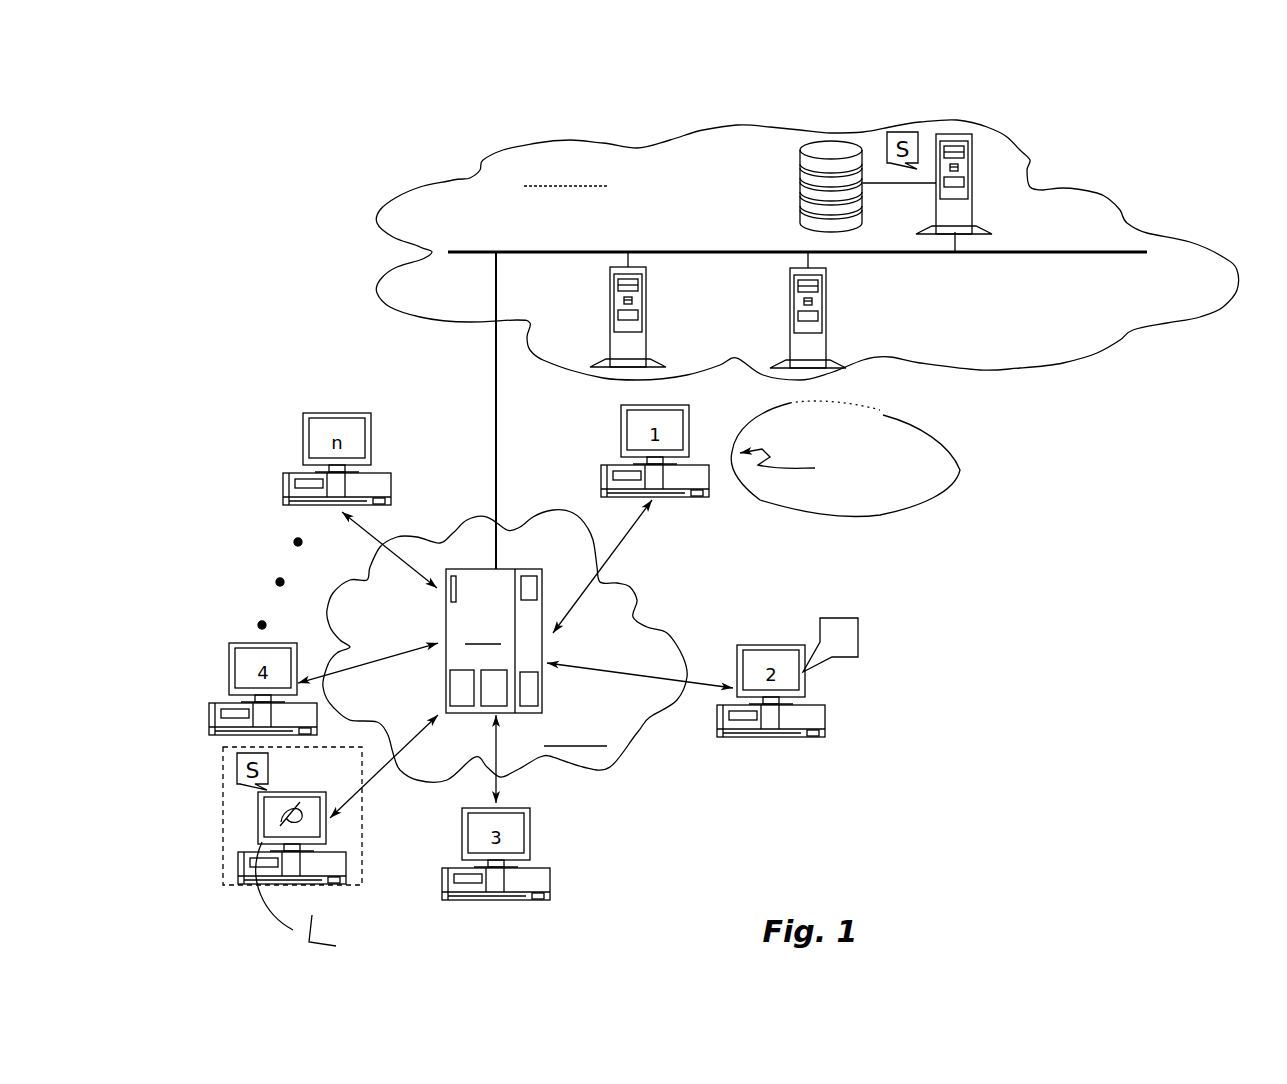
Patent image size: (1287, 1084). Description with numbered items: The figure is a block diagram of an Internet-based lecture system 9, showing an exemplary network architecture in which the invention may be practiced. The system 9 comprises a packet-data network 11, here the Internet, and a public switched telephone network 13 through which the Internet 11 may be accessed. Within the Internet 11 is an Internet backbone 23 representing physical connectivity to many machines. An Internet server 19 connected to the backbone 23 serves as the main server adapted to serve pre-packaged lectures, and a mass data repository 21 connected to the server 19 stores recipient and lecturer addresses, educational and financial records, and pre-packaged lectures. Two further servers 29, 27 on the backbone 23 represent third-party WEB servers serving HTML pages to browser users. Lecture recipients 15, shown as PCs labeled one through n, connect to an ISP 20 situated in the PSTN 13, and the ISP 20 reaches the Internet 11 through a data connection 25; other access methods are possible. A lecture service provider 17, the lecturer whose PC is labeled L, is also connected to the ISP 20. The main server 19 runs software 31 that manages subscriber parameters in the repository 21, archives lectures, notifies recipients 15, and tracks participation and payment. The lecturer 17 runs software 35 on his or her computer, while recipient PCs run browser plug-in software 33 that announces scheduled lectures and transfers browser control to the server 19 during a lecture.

The Internet-based lecture system 9 is at (1068, 531).
The packet-data network 11 is at (466, 162).
The public switched telephone network 13 is at (612, 772).
The lecture recipients 15 is at (825, 469).
The lecture service provider 17 is at (223, 850).
The Internet server 19 is at (973, 193).
The ISP 20 is at (545, 647).
The mass data repository 21 is at (800, 207).
The Internet backbone 23 is at (592, 251).
The data connection 25 is at (494, 442).
The server 27 is at (827, 325).
The server 29 is at (647, 325).
The software 31 is at (903, 132).
The software 33 is at (858, 638).
The software 35 is at (237, 778).